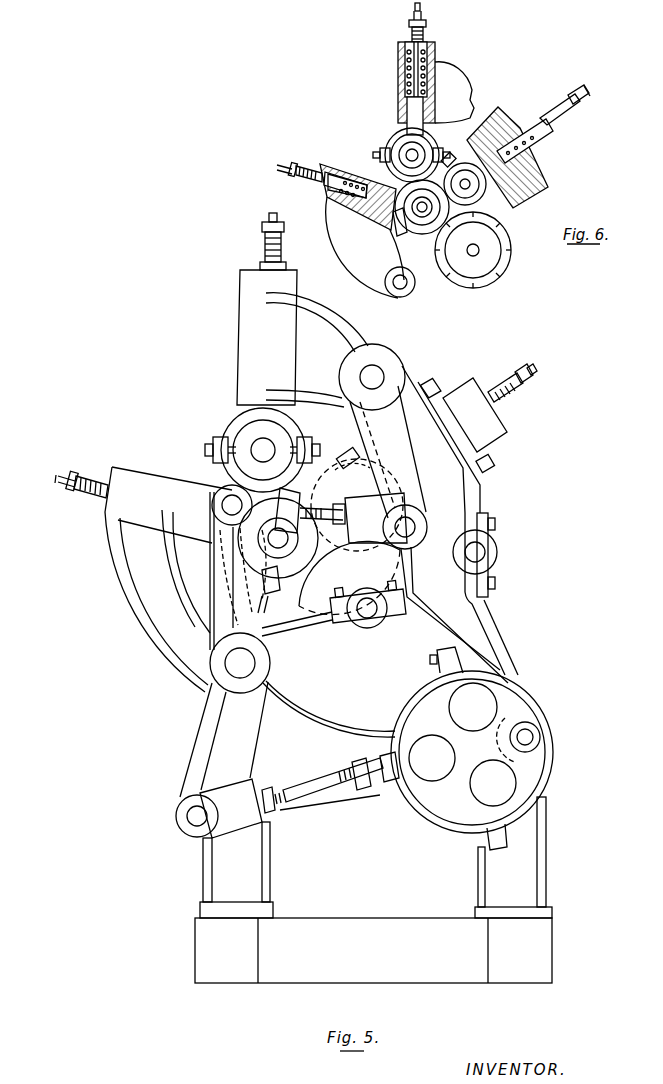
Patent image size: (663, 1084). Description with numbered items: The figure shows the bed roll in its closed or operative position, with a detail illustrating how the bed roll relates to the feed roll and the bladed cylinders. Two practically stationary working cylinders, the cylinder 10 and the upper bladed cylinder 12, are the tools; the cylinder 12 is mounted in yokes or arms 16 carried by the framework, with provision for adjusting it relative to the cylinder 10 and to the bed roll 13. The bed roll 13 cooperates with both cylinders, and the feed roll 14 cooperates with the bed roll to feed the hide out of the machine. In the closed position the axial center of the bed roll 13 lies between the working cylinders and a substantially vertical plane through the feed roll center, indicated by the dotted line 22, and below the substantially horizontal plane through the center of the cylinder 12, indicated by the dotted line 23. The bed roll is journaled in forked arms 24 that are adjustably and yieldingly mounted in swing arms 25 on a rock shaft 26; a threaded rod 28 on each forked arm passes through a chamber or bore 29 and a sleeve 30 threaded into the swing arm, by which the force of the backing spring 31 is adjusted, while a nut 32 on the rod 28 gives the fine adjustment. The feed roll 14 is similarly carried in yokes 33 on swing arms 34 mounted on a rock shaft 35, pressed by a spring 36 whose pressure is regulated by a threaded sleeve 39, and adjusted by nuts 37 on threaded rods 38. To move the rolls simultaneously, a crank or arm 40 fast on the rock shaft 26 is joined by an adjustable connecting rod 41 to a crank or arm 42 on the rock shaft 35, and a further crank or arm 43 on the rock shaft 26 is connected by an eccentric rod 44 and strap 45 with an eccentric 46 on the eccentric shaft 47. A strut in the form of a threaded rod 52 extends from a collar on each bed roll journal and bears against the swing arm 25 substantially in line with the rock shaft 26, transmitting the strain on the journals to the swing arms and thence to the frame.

In FIG. 6, the working cylinder 10 is at (510, 261).
In FIG. 5, the working cylinder 10 is at (322, 654).
In FIG. 6, the upper bladed cylinder 12 is at (490, 210).
In FIG. 5, the upper bladed cylinder 12 is at (400, 491).
In FIG. 6, the bed roll 13 is at (421, 234).
In FIG. 5, the bed roll 13 is at (303, 567).
In FIG. 6, the feed roll 14 is at (394, 164).
In FIG. 5, the feed roll 14 is at (226, 466).
In FIG. 6, the yokes or arms 16 is at (462, 160).
In FIG. 5, the yokes or arms 16 is at (349, 457).
In FIG. 6, the vertical plane 22 is at (407, 115).
In FIG. 6, the horizontal plane 23 is at (552, 186).
In FIG. 6, the forked arms 24 is at (396, 228).
In FIG. 5, the forked arms 24 is at (292, 582).
In FIG. 6, the swing arms 25 is at (334, 240).
In FIG. 5, the swing arms 25 is at (128, 604).
In FIG. 5, the rock shaft 26 is at (235, 663).
In FIG. 6, the threaded rod 28 is at (283, 165).
In FIG. 5, the threaded rod 28 is at (58, 476).
In FIG. 6, the chamber or bore 29 is at (351, 172).
In FIG. 6, the sleeve 30 is at (310, 167).
In FIG. 5, the sleeve 30 is at (88, 476).
In FIG. 6, the spring 31 is at (325, 203).
In FIG. 6, the nut 32 is at (290, 172).
In FIG. 5, the nut 32 is at (66, 487).
In FIG. 6, the yokes 33 is at (394, 140).
In FIG. 5, the yokes 33 is at (232, 425).
In FIG. 6, the swing arms 34 is at (461, 80).
In FIG. 5, the swing arms 34 is at (326, 318).
In FIG. 5, the rock shaft 35 is at (374, 375).
In FIG. 6, the spring 36 is at (404, 72).
In FIG. 6, the nuts 37 is at (409, 23).
In FIG. 5, the nuts 37 is at (262, 227).
In FIG. 6, the threaded rods 38 is at (422, 8).
In FIG. 5, the threaded rods 38 is at (268, 216).
In FIG. 6, the threaded sleeve 39 is at (424, 35).
In FIG. 5, the threaded sleeve 39 is at (265, 248).
In FIG. 5, the crank or arm 40 is at (212, 582).
In FIG. 5, the connecting rod 41 is at (355, 541).
In FIG. 5, the crank or arm 42 is at (413, 467).
In FIG. 5, the crank or arm 43 is at (248, 748).
In FIG. 5, the eccentric rod 44 is at (311, 785).
In FIG. 5, the strap 45 is at (450, 824).
In FIG. 5, the eccentric 46 is at (432, 792).
In FIG. 5, the eccentric shaft 47 is at (514, 738).
In FIG. 5, the threaded rod 52 is at (252, 598).